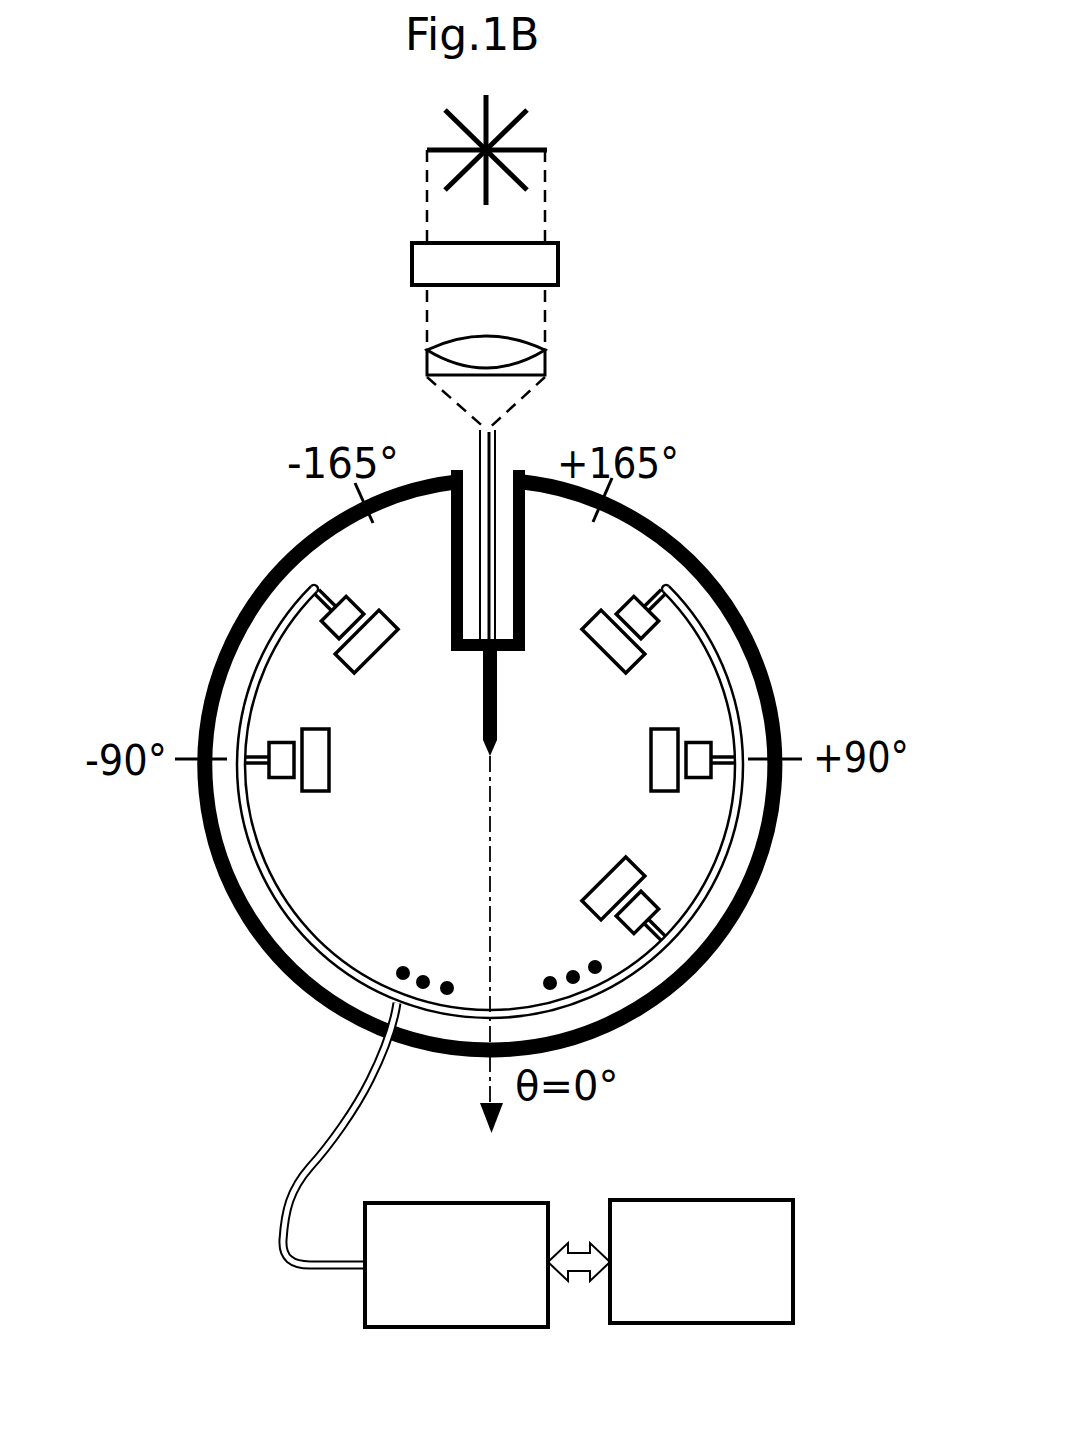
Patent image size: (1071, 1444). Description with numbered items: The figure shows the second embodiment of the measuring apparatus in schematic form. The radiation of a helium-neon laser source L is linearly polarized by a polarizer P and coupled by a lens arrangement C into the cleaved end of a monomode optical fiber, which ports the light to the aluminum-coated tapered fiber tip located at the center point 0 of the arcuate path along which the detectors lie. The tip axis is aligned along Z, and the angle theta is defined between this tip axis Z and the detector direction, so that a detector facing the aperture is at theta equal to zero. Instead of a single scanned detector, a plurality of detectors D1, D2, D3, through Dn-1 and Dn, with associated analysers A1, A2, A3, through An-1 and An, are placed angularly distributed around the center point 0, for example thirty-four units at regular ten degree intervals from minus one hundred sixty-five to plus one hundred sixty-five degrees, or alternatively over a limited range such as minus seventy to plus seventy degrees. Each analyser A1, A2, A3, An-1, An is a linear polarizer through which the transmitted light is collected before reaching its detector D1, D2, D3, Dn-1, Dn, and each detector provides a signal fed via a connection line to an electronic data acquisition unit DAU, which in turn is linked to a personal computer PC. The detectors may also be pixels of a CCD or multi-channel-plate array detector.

The helium-neon laser source L is at (512, 150).
The polarizer P is at (506, 265).
The lens arrangement C is at (516, 359).
The detector D1 is at (628, 606).
The analyser A1 is at (603, 615).
The detector D2 is at (697, 738).
The analyser A2 is at (663, 727).
The detector D3 is at (652, 893).
The analyser A3 is at (638, 862).
The detector Dn is at (350, 612).
The analyser An is at (413, 601).
The detector Dn-1 is at (278, 743).
The analyser An-1 is at (331, 762).
The center point 0 is at (476, 716).
The tip axis Z is at (474, 947).
The electronic data acquisition unit DAU is at (456, 1265).
The personal computer PC is at (701, 1261).